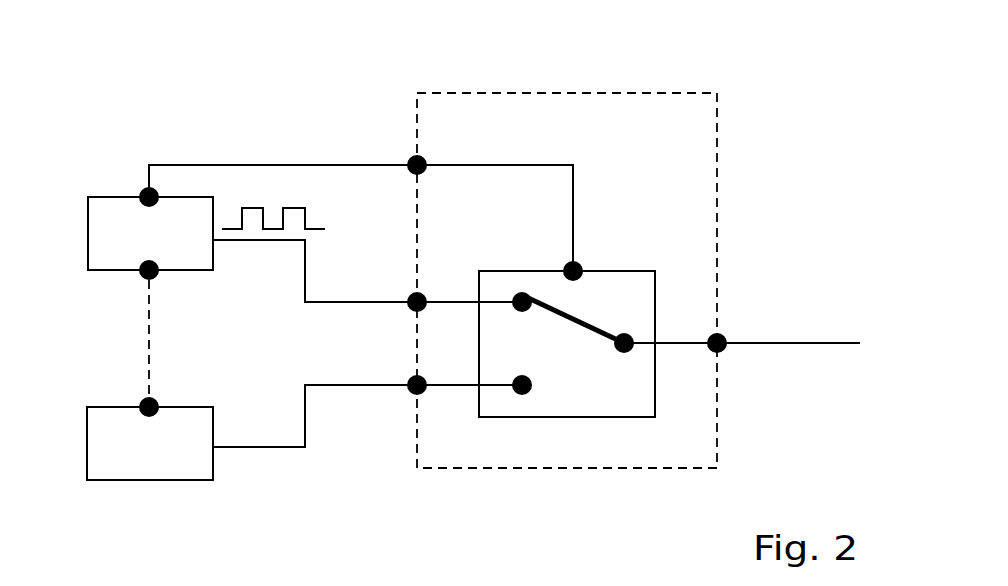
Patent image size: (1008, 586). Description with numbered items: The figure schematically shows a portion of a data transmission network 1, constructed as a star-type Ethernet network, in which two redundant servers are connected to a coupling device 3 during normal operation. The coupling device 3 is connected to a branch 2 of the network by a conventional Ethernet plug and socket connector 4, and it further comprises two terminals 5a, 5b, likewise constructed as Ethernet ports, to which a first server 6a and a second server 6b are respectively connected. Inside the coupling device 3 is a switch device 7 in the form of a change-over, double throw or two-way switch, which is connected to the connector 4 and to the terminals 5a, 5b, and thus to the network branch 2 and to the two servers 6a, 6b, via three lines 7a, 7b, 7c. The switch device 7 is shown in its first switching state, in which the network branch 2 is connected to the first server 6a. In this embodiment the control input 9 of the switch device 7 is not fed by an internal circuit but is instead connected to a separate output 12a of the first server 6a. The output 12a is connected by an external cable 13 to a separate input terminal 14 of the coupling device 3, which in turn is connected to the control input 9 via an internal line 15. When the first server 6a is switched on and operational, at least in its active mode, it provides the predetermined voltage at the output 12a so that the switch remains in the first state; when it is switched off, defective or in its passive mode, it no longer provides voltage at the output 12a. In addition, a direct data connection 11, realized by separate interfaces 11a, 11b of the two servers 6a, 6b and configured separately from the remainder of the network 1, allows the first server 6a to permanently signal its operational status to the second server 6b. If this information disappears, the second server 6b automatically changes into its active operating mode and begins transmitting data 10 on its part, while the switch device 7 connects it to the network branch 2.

The data transmission network 1 is at (192, 74).
The branch 2 is at (822, 343).
The coupling device 3 is at (717, 93).
The plug and socket connector 4 is at (722, 340).
The terminal 5a is at (413, 293).
The terminal 5b is at (413, 395).
The first server 6a is at (150, 233).
The second server 6b is at (150, 443).
The switch device 7 is at (635, 271).
The line 7a is at (675, 345).
The line 7b is at (438, 305).
The line 7c is at (440, 387).
The control input 9 is at (565, 268).
The data signals 10 is at (273, 208).
The direct data connection 11 is at (148, 342).
The interface 11a is at (158, 275).
The interface 11b is at (162, 400).
The output 12a is at (143, 193).
The external cable 13 is at (355, 165).
The input terminal 14 is at (412, 160).
The internal line 15 is at (573, 195).